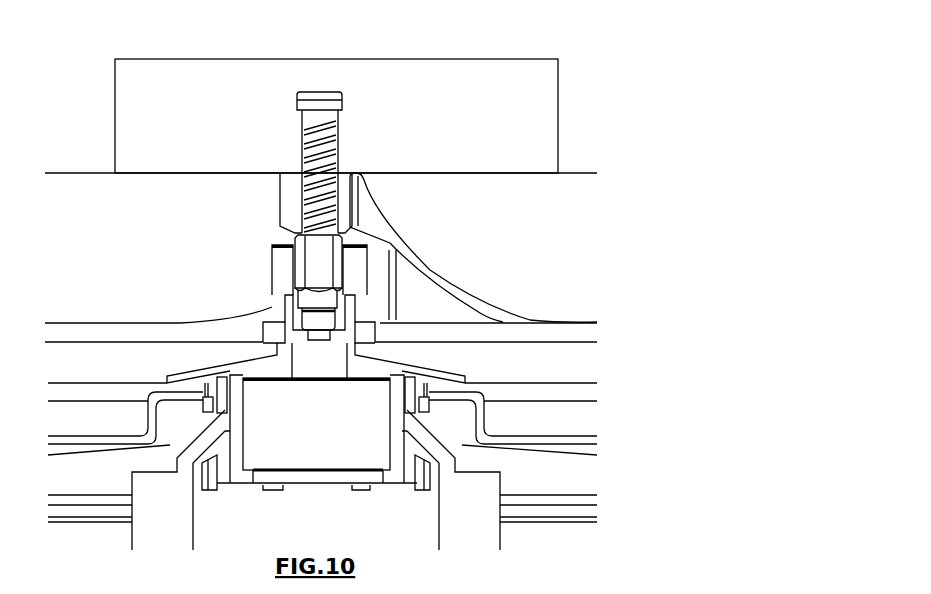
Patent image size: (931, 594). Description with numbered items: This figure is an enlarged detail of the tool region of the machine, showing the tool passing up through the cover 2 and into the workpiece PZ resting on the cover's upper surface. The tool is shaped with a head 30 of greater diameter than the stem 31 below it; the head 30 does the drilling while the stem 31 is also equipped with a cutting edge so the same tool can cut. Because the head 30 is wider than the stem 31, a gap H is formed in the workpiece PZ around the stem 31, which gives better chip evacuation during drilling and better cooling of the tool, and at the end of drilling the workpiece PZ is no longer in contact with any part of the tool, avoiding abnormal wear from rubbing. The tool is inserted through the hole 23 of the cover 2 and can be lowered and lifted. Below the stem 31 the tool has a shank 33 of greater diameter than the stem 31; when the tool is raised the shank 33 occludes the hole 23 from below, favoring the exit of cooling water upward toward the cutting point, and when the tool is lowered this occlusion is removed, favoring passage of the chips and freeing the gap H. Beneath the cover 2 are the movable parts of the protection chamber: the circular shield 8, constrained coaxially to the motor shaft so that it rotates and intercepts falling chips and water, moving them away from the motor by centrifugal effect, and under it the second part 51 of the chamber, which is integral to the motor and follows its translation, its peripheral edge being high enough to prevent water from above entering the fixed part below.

The workpiece PZ is at (200, 90).
The cover 2 is at (578, 171).
The head 30 is at (316, 92).
The stem 31 is at (333, 155).
The gap H is at (338, 135).
The hole 23 is at (280, 195).
The shank 33 is at (302, 268).
The circular shield 8 is at (252, 308).
The second part of the chamber 51 is at (527, 433).